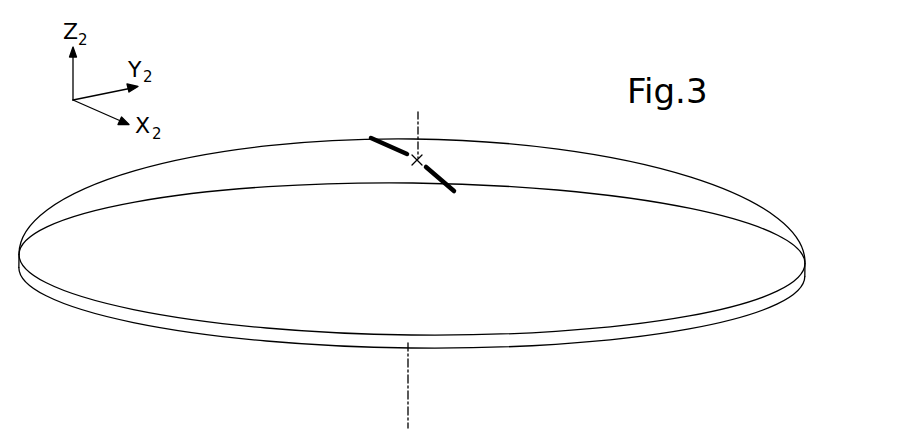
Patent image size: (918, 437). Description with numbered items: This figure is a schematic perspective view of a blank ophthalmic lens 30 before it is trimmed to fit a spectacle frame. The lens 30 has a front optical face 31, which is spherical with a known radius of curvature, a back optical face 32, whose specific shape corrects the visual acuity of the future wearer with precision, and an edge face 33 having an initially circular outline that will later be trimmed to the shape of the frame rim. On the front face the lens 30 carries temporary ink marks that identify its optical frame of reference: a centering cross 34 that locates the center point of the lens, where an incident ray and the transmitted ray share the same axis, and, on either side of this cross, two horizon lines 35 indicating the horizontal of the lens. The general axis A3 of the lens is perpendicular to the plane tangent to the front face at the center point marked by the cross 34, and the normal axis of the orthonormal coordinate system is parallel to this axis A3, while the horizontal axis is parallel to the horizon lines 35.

The ophthalmic lens 30 is at (412, 250).
The front optical face 31 is at (288, 156).
The back optical face 32 is at (322, 348).
The edge face 33 is at (548, 339).
The centering cross 34 is at (421, 162).
The horizon lines 35 is at (432, 168).
The general axis A3 is at (408, 382).